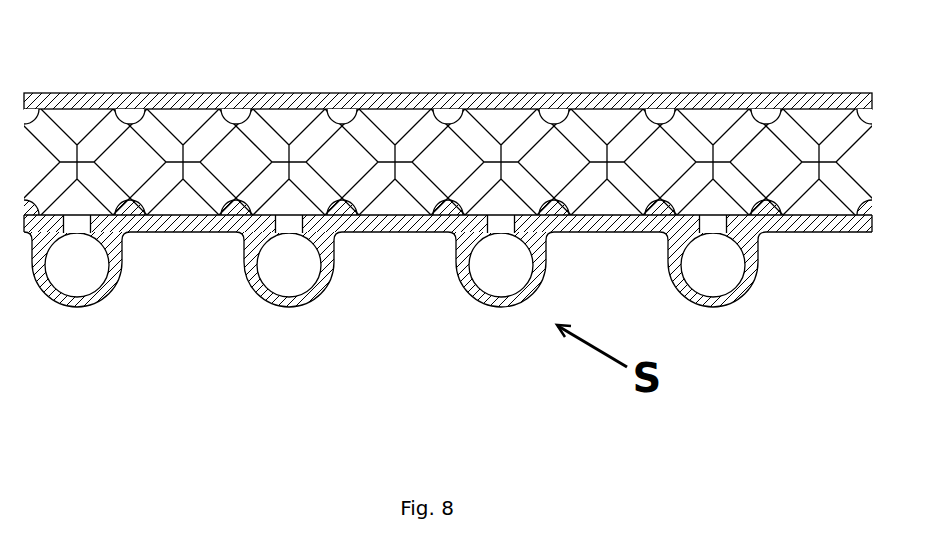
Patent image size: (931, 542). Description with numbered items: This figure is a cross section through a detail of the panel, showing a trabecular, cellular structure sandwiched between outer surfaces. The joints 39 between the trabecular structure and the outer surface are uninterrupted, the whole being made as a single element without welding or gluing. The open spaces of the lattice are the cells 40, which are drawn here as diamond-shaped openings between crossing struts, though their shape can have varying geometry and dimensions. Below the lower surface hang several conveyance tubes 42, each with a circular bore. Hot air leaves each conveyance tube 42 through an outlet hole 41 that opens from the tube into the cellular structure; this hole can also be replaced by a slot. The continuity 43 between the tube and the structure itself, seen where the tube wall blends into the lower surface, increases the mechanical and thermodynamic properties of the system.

The uninterrupted joints 39 is at (665, 103).
The cells 40 is at (207, 133).
The outlet hole 41 is at (78, 220).
The conveyance tube 42 is at (320, 255).
The continuity between the tube and the structure 43 is at (670, 243).